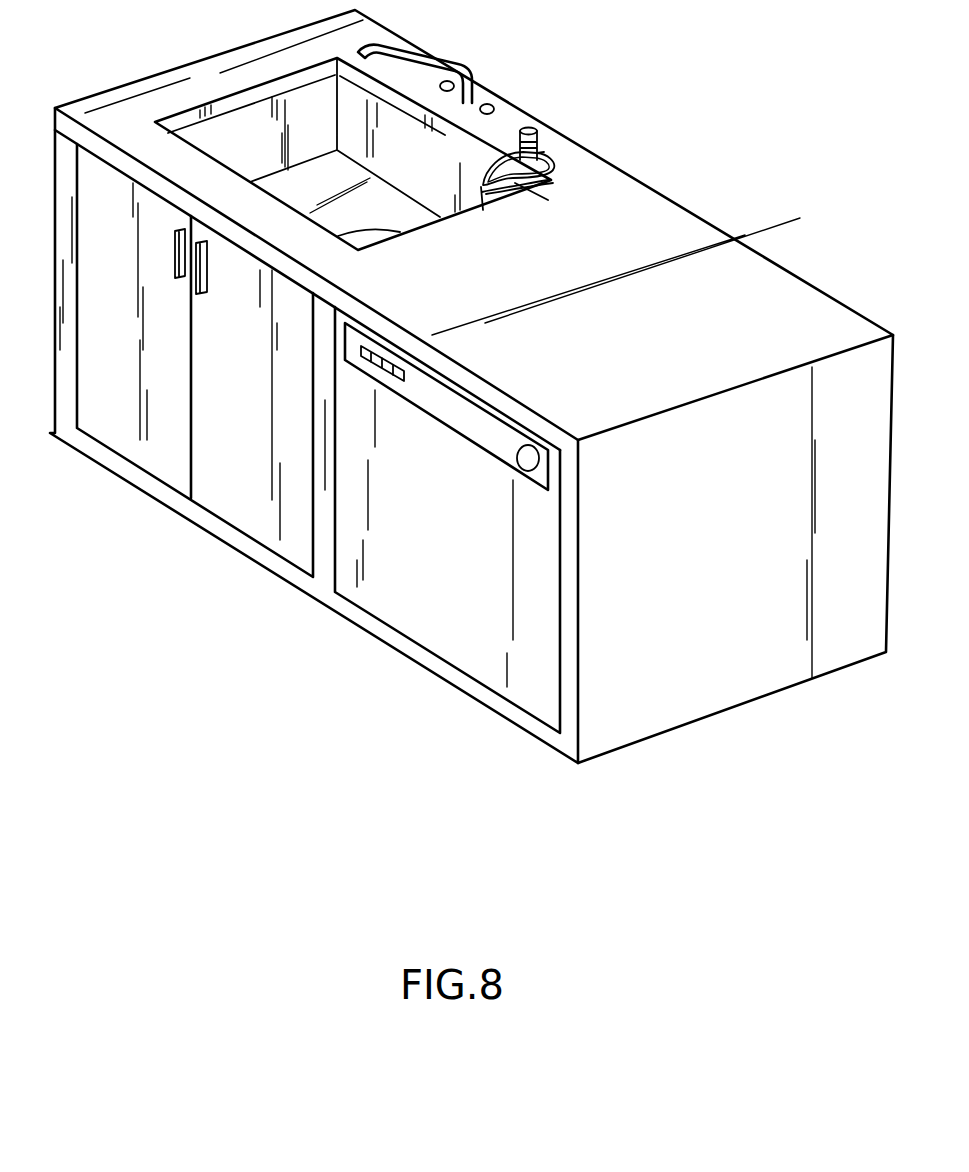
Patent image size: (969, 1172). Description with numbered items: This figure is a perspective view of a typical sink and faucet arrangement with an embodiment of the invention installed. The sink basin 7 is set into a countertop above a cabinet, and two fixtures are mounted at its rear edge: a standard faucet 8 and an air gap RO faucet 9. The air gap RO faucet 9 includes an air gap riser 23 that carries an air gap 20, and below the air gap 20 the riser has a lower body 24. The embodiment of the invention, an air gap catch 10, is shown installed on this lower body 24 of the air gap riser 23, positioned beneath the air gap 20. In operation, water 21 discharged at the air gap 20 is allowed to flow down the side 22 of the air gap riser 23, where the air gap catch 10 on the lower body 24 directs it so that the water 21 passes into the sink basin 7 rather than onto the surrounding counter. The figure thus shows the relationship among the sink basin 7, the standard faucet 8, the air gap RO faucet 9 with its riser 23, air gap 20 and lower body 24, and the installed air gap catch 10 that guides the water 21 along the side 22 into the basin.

The sink basin 7 is at (419, 169).
The standard faucet 8 is at (476, 72).
The air gap RO faucet 9 is at (530, 148).
The air gap catch 10 is at (601, 126).
The air gap 20 is at (547, 128).
The water 21 is at (380, 237).
The side of air gap riser 22 is at (556, 164).
The air gap riser 23 is at (537, 127).
The lower body 24 is at (551, 150).